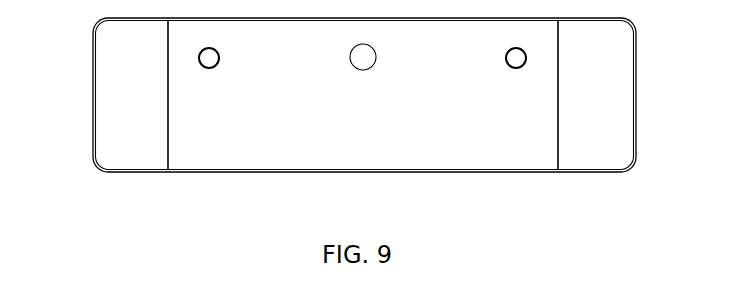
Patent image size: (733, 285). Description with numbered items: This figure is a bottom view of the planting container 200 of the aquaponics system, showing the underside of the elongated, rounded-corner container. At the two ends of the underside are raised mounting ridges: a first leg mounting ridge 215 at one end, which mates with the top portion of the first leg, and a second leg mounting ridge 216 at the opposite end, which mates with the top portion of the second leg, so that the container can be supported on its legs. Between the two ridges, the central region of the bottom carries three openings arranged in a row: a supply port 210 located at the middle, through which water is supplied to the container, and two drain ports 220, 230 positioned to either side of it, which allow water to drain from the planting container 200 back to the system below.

The planting container 200 is at (364, 117).
The first leg mounting ridge 215 is at (645, 120).
The second leg mounting ridge 216 is at (83, 133).
The supply port 210 is at (356, 77).
The drain port 220 is at (214, 79).
The drain port 230 is at (513, 79).